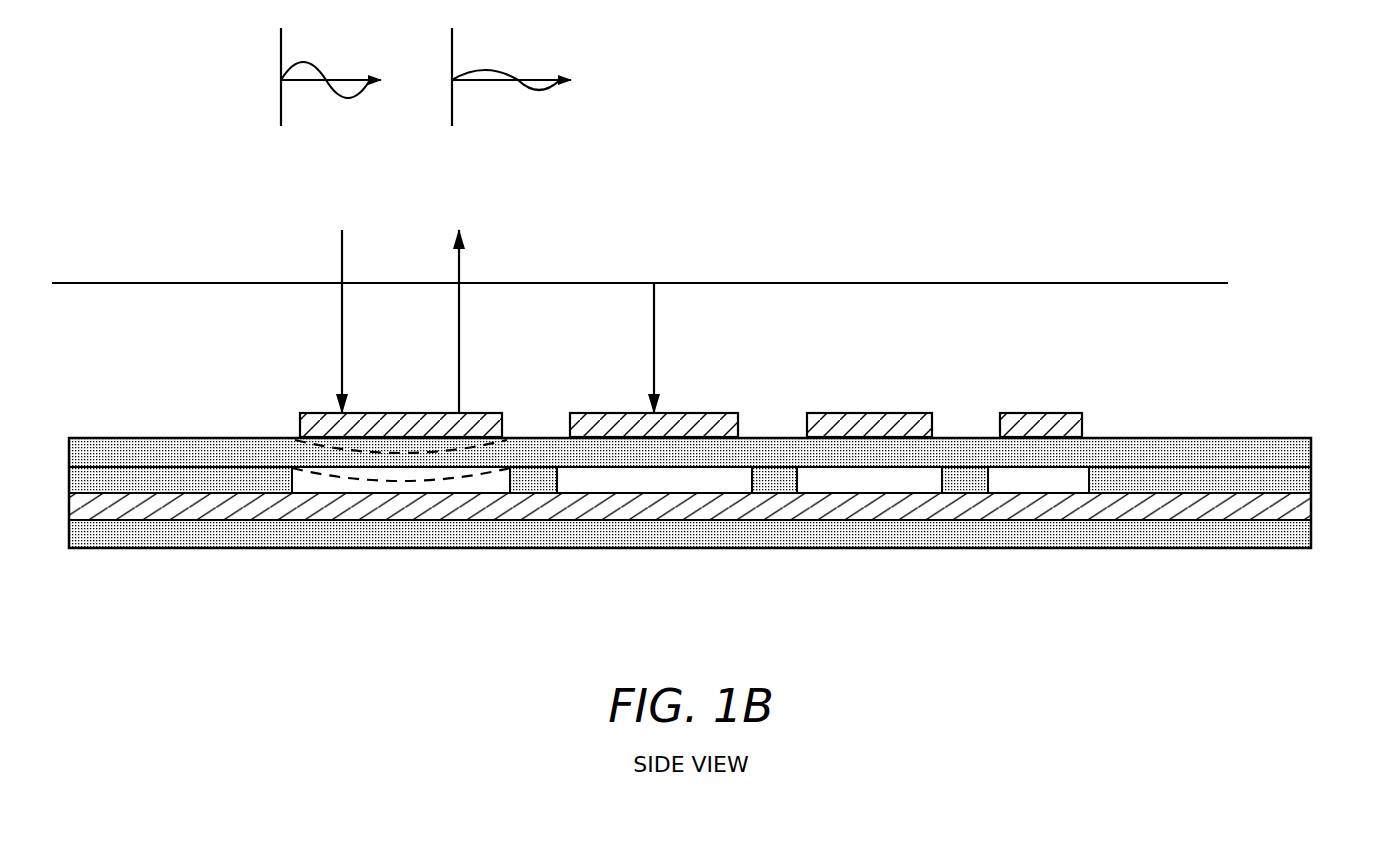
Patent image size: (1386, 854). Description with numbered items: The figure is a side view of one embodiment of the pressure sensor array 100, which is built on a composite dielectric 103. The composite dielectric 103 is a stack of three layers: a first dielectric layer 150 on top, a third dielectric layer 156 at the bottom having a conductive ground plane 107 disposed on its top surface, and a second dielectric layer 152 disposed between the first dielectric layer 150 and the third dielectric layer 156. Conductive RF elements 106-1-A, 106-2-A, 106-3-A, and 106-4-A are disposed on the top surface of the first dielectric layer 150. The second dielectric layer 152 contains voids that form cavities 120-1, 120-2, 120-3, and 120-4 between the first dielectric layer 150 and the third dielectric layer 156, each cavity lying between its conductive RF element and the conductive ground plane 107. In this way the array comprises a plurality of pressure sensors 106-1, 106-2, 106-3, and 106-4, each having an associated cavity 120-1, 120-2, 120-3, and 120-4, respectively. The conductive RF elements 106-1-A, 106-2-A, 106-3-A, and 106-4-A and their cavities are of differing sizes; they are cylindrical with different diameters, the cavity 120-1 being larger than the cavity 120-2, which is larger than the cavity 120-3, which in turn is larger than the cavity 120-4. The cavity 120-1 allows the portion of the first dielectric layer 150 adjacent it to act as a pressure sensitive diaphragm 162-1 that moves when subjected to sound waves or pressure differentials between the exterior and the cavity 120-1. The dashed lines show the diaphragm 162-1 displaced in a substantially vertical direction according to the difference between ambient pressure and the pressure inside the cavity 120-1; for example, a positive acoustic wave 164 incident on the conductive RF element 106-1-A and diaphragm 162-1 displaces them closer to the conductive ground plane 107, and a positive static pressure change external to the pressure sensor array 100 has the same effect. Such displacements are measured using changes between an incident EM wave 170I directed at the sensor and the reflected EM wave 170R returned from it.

The pressure sensor array 100 is at (222, 78).
The composite dielectric 103 is at (97, 402).
The positive acoustic wave 164 is at (1070, 282).
The incident EM wave 170I is at (308, 118).
The reflected EM wave 170R is at (491, 118).
The pressure sensor 106-1 is at (396, 385).
The pressure sensor 106-2 is at (674, 385).
The pressure sensor 106-3 is at (881, 385).
The pressure sensor 106-4 is at (1069, 385).
The conductive RF element 106-1-A is at (333, 412).
The conductive RF element 106-2-A is at (606, 410).
The conductive RF element 106-3-A is at (821, 410).
The conductive RF element 106-4-A is at (1013, 410).
The cavity 120-1 is at (326, 484).
The cavity 120-2 is at (641, 480).
The cavity 120-3 is at (869, 482).
The cavity 120-4 is at (1044, 482).
The pressure sensitive diaphragm 162-1 is at (390, 474).
The first dielectric layer 150 is at (1312, 452).
The second dielectric layer 152 is at (1312, 480).
The conductive ground plane 107 is at (1312, 507).
The third dielectric layer 156 is at (1312, 534).